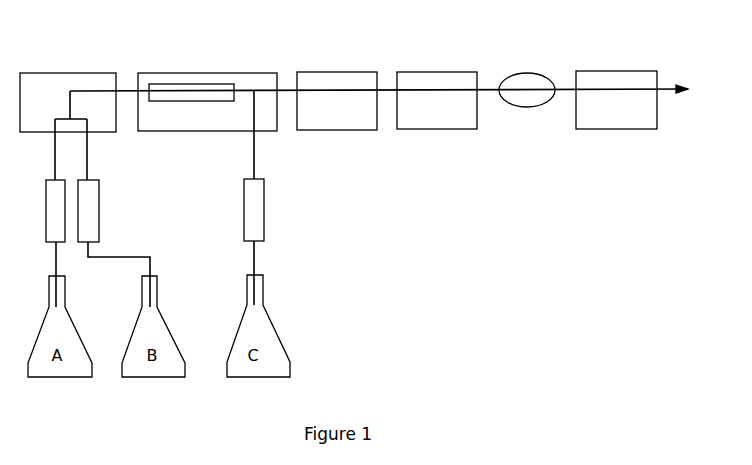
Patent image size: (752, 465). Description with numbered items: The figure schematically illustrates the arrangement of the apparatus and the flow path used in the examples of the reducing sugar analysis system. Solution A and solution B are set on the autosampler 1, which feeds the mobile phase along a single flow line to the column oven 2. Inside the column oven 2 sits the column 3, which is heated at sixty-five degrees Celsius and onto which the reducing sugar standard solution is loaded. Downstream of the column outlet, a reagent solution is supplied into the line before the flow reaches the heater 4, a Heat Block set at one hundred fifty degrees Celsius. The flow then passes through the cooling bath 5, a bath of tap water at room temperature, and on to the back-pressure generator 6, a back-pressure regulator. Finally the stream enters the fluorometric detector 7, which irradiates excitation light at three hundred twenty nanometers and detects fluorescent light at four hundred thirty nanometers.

The autosampler 1 is at (72, 73).
The column oven 2 is at (208, 73).
The column 3 is at (178, 102).
The heater (Heat Block) 4 is at (322, 72).
The cooling bath 5 is at (428, 72).
The back-pressure generator 6 is at (523, 73).
The fluorometric detector 7 is at (608, 71).